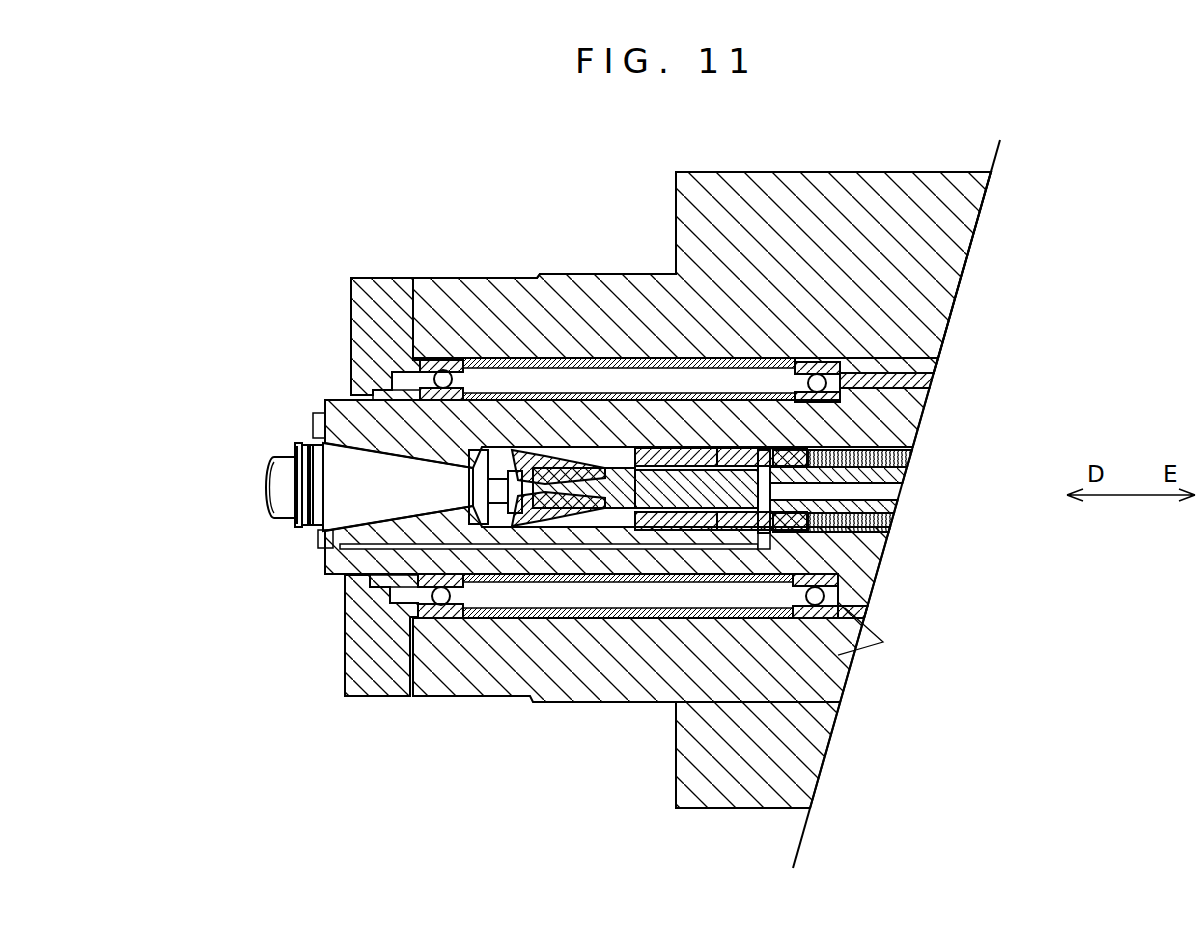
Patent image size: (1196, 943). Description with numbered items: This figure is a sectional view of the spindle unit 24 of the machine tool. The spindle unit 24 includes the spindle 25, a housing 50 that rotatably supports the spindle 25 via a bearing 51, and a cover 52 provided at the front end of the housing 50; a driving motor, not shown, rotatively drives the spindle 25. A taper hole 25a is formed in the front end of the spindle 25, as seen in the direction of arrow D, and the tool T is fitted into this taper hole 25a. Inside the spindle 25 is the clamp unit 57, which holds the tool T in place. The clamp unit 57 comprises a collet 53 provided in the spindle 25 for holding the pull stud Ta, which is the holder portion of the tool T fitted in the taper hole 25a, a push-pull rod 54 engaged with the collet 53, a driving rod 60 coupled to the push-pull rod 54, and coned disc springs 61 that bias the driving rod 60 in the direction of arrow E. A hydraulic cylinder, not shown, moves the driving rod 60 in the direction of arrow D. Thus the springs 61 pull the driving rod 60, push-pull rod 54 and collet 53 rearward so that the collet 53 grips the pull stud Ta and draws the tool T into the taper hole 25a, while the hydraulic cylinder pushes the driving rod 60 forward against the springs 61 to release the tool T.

The spindle unit 24 is at (1097, 276).
The spindle 25 is at (343, 412).
The taper hole 25a is at (313, 528).
The housing 50 is at (845, 178).
The bearing 51 is at (438, 358).
The cover 52 is at (355, 673).
The collet 53 is at (505, 470).
The push-pull rod 54 is at (650, 448).
The clamp unit 57 is at (922, 526).
The driving rod 60 is at (895, 477).
The coned disc springs 61 is at (912, 458).
The tool T is at (278, 496).
The pull stud Ta is at (505, 490).